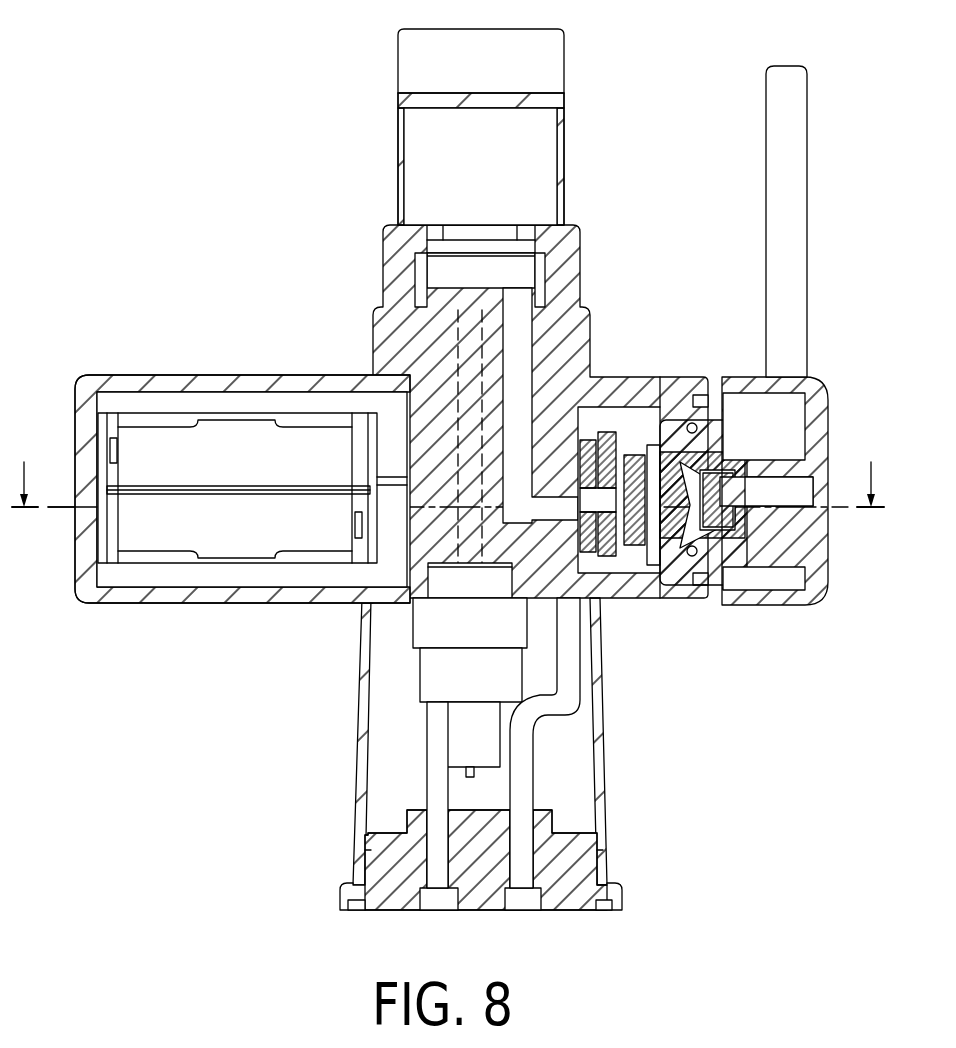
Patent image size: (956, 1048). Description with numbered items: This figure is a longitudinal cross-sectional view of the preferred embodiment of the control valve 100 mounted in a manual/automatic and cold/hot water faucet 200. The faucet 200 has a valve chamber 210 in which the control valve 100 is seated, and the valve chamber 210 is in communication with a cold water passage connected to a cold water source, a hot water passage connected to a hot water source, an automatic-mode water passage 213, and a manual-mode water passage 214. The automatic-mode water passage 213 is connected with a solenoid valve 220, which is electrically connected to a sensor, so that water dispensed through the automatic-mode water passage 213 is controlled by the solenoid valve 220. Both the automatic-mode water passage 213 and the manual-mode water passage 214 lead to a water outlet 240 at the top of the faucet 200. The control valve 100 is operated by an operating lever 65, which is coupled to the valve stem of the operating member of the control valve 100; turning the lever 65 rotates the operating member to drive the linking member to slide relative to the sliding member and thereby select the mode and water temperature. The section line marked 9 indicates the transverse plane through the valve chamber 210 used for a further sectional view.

The manual/automatic and cold/hot water faucet 200 is at (156, 214).
The water outlet 240 is at (385, 64).
The manual-mode water passage 214 is at (517, 320).
The automatic-mode water passage 213 is at (452, 353).
The valve chamber 210 is at (640, 392).
The control valve 100 is at (636, 576).
The operating lever 65 is at (778, 93).
The solenoid valve 220 is at (404, 661).
The section line 9- 9 is at (448, 473).